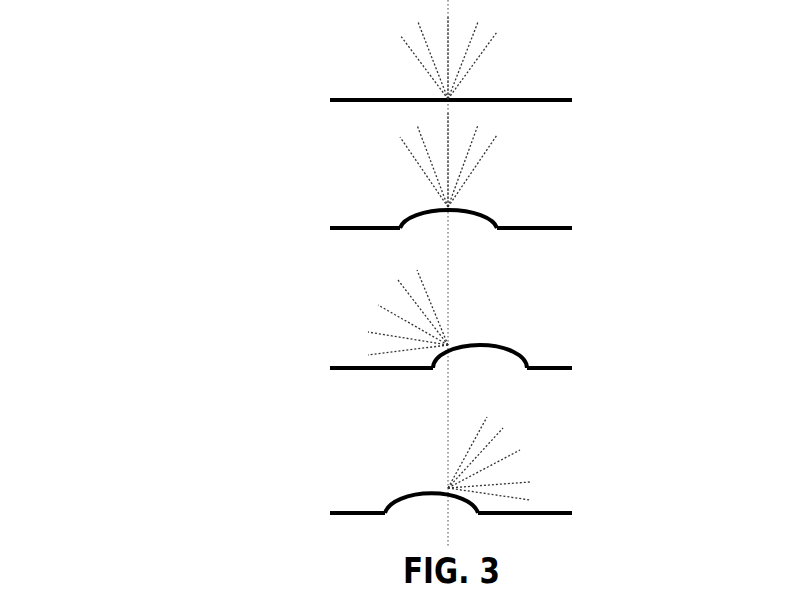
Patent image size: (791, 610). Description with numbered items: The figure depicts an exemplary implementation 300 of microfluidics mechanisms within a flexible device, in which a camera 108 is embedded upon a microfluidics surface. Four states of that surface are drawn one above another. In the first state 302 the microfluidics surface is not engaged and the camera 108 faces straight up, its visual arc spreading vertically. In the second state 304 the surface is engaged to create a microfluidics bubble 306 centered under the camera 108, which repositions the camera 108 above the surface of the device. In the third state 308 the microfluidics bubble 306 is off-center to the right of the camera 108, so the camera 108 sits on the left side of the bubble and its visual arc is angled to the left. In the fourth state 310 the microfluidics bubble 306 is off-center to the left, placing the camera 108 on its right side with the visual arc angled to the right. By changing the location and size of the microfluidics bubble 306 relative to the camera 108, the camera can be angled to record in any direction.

The exemplary implementation 300 is at (137, 63).
The camera 108 is at (462, 92).
The microfluidics surface not engaged 302 is at (422, 104).
The microfluidics surface engaged with centered bubble 304 is at (422, 227).
The microfluidics bubble 306 is at (463, 510).
The microfluidics surface engaged with bubble off-center to the right 308 is at (426, 368).
The microfluidics surface engaged with bubble off-center to the left 310 is at (427, 517).